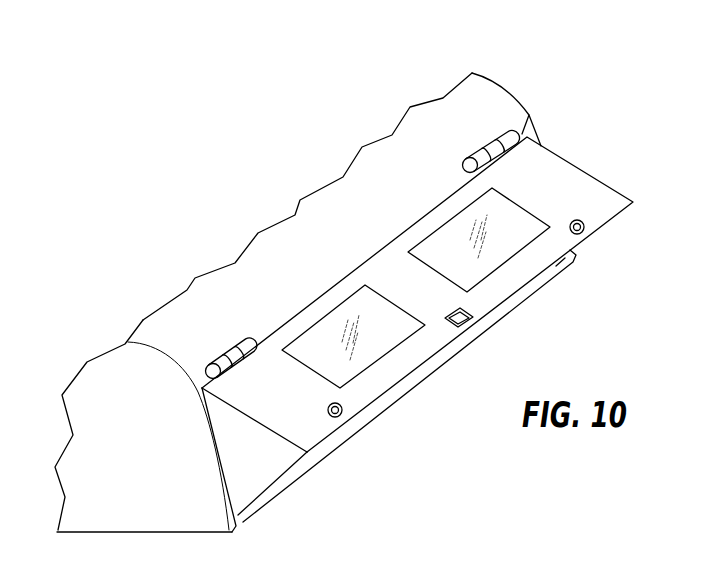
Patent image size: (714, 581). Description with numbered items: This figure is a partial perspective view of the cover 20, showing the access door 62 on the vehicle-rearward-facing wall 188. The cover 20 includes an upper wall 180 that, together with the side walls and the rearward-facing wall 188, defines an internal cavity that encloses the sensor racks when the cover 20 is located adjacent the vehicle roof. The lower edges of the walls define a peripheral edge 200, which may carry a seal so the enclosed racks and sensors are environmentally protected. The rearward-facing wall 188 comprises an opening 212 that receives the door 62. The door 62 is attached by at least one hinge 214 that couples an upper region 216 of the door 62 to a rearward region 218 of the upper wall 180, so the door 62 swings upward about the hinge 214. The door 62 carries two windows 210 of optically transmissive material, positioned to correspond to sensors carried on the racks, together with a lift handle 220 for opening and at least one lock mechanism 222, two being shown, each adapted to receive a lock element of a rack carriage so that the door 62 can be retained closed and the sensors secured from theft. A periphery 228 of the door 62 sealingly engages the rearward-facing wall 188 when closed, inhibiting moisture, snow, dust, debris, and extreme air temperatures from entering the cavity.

The cover 20 is at (75, 537).
The door 62 is at (593, 170).
The upper wall 180 is at (482, 97).
The vehicle-rearward-facing wall 188 is at (238, 522).
The peripheral edge 200 is at (155, 532).
The windows 210 is at (508, 197).
The opening 212 is at (236, 487).
The hinge 214 is at (487, 150).
The upper region of the door 216 is at (535, 115).
The rearward region of the upper wall 218 is at (483, 113).
The lift handle 220 is at (465, 323).
The lock mechanism 222 is at (583, 232).
The periphery of the door 228 is at (250, 417).